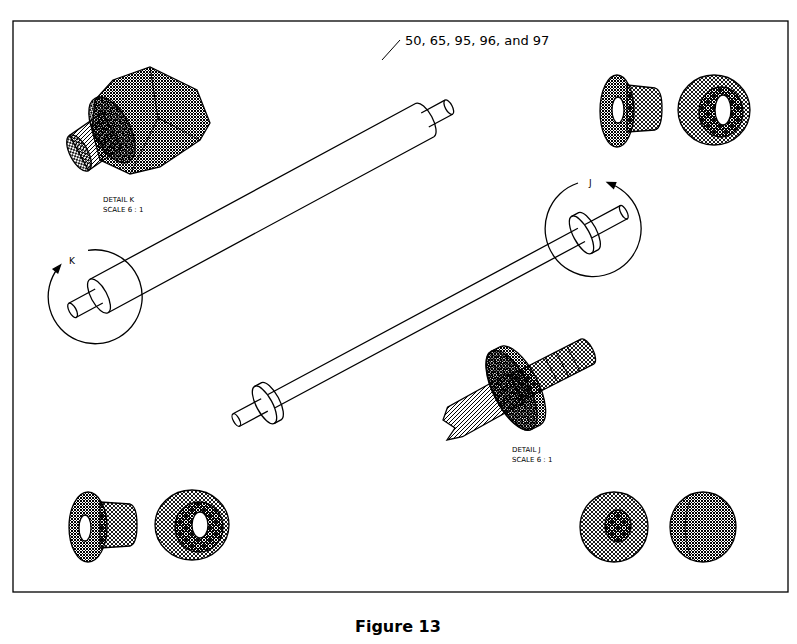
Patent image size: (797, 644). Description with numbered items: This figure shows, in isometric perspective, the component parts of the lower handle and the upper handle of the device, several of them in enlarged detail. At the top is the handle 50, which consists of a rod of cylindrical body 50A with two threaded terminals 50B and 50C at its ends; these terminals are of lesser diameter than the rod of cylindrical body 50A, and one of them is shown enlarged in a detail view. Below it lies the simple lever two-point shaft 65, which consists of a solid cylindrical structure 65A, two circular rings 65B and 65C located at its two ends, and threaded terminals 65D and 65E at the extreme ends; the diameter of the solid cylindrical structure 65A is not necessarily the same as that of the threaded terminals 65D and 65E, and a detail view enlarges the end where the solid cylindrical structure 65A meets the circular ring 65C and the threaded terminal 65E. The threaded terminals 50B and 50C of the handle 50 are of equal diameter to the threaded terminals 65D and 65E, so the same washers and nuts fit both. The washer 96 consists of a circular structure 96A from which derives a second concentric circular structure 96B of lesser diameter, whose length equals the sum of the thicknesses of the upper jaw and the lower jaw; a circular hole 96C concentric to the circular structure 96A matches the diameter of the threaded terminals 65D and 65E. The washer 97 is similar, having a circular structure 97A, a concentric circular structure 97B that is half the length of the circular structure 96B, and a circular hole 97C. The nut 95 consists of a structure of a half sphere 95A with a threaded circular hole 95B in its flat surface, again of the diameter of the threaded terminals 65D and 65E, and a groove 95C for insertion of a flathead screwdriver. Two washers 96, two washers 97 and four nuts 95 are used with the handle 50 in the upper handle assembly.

The handle 50 is at (252, 97).
The rod of cylindrical body 50A is at (267, 183).
The threaded terminal 50B is at (78, 118).
The threaded terminal 50C is at (445, 103).
The simple lever two-point shaft 65 is at (415, 265).
The solid cylindrical structure 65A is at (413, 318).
The circular ring 65B is at (284, 426).
The circular ring 65C is at (605, 245).
The threaded terminal 65D is at (248, 408).
The threaded terminal 65E is at (612, 215).
The nut 95 is at (655, 488).
The structure of a half sphere 95A is at (585, 548).
The threaded circular hole 95B is at (583, 510).
The groove 95C is at (682, 553).
The washer 96 is at (137, 487).
The circular structure 96A is at (77, 492).
The second concentric circular structure 96B is at (128, 547).
The circular hole 96C is at (230, 520).
The washer 97 is at (673, 67).
The circular structure 97A is at (602, 125).
The circular structure 97B is at (697, 138).
The circular hole 97C is at (730, 142).